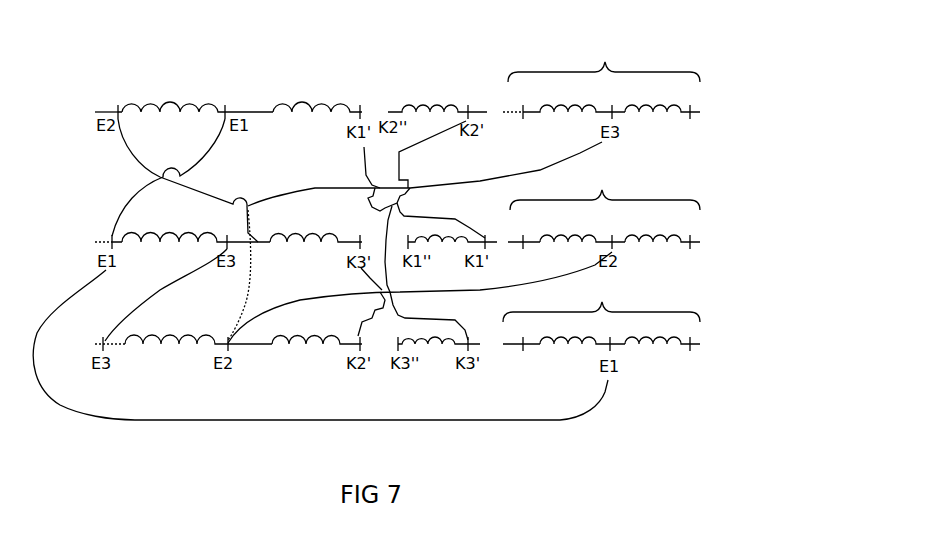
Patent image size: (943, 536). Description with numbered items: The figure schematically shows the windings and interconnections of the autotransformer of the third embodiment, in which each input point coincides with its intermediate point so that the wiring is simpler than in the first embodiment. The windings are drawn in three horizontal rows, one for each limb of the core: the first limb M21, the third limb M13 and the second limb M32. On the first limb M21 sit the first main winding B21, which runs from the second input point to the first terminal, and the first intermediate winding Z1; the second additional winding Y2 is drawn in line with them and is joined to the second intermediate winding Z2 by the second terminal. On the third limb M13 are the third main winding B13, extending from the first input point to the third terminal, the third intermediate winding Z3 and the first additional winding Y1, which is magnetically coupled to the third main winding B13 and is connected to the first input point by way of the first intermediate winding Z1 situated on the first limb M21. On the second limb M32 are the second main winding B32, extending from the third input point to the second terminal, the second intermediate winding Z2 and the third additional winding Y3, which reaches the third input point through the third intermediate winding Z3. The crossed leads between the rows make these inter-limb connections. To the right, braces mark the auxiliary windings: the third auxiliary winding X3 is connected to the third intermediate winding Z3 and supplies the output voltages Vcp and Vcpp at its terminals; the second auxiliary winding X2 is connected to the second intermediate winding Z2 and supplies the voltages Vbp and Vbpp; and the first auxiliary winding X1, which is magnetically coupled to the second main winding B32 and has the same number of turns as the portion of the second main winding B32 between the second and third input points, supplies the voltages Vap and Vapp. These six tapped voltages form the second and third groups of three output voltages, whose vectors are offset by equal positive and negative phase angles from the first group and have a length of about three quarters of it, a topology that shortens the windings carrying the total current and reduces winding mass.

The first limb M21 is at (82, 110).
The third limb M13 is at (81, 242).
The second limb M32 is at (76, 343).
The first main winding B21 is at (171, 92).
The first intermediate winding Z1 is at (317, 92).
The second additional winding Y2 is at (437, 95).
The third main winding B13 is at (174, 221).
The third intermediate winding Z3 is at (316, 220).
The first additional winding Y1 is at (452, 223).
The second main winding B32 is at (176, 323).
The second intermediate winding Z2 is at (317, 323).
The third additional winding Y3 is at (439, 325).
The third auxiliary winding X3 is at (604, 60).
The second auxiliary winding X2 is at (605, 188).
The first auxiliary winding X1 is at (601, 300).
The third output voltage of the second group Vcp is at (564, 123).
The third output voltage of the third group Vcpp is at (662, 123).
The second output voltage of the second group Vbp is at (565, 254).
The second output voltage of the third group Vbpp is at (662, 254).
The first output voltage of the second group Vap is at (564, 356).
The first output voltage of the third group Vapp is at (662, 356).